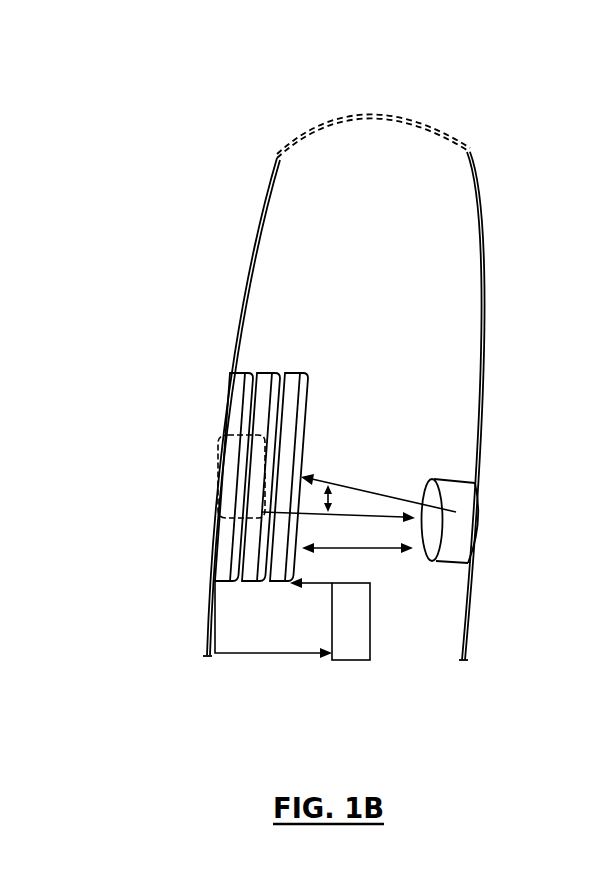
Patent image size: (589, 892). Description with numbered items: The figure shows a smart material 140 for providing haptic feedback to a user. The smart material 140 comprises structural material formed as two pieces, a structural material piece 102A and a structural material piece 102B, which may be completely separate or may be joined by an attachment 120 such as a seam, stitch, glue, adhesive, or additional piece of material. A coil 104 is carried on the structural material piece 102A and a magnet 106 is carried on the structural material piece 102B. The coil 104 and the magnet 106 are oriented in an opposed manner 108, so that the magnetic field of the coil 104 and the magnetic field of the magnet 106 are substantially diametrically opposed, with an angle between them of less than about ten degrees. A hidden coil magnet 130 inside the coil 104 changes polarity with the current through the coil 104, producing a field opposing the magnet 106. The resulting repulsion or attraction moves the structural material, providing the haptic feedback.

The smart material 140 is at (118, 226).
The structural material piece 102A is at (267, 216).
The structural material piece 102B is at (488, 181).
The attachment 120 is at (320, 128).
The coil 104 is at (296, 373).
The magnet 106 is at (463, 500).
The coil magnet 130 is at (218, 454).
The opposed manner 108 is at (314, 602).